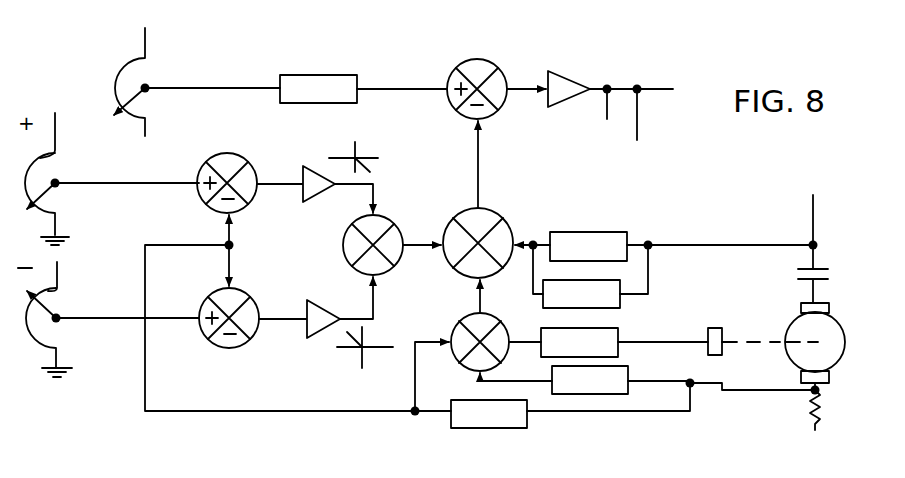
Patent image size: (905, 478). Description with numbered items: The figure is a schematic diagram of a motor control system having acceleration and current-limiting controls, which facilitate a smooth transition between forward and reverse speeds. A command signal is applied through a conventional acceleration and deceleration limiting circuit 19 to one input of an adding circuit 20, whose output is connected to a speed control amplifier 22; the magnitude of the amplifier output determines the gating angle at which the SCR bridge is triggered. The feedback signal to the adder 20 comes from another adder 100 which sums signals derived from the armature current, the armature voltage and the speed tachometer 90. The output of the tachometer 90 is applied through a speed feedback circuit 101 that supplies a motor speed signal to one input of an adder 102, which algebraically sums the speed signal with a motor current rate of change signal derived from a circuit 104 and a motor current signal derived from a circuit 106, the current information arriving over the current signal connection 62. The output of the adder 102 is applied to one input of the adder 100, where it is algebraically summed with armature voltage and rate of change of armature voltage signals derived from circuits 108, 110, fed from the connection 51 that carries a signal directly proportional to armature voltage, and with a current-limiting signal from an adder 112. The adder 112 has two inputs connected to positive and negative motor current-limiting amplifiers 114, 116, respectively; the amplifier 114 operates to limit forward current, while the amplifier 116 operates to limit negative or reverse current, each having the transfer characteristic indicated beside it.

The acceleration and deceleration limiting circuit 19 is at (330, 75).
The adding circuit 20 is at (492, 63).
The speed control amplifier 22 is at (573, 80).
The connection 51 is at (697, 222).
The current signal connection 62 is at (693, 371).
The speed tachometer 90 is at (713, 328).
The adder 100 is at (503, 219).
The speed feedback circuit 101 is at (587, 353).
The adder 102 is at (459, 326).
The circuit 104 is at (497, 425).
The circuit 106 is at (598, 391).
The circuit 108 is at (596, 257).
The circuit 110 is at (589, 305).
The adder 112 is at (395, 225).
The positive motor current-limiting amplifier 114 is at (240, 147).
The negative motor current-limiting amplifier 116 is at (229, 348).